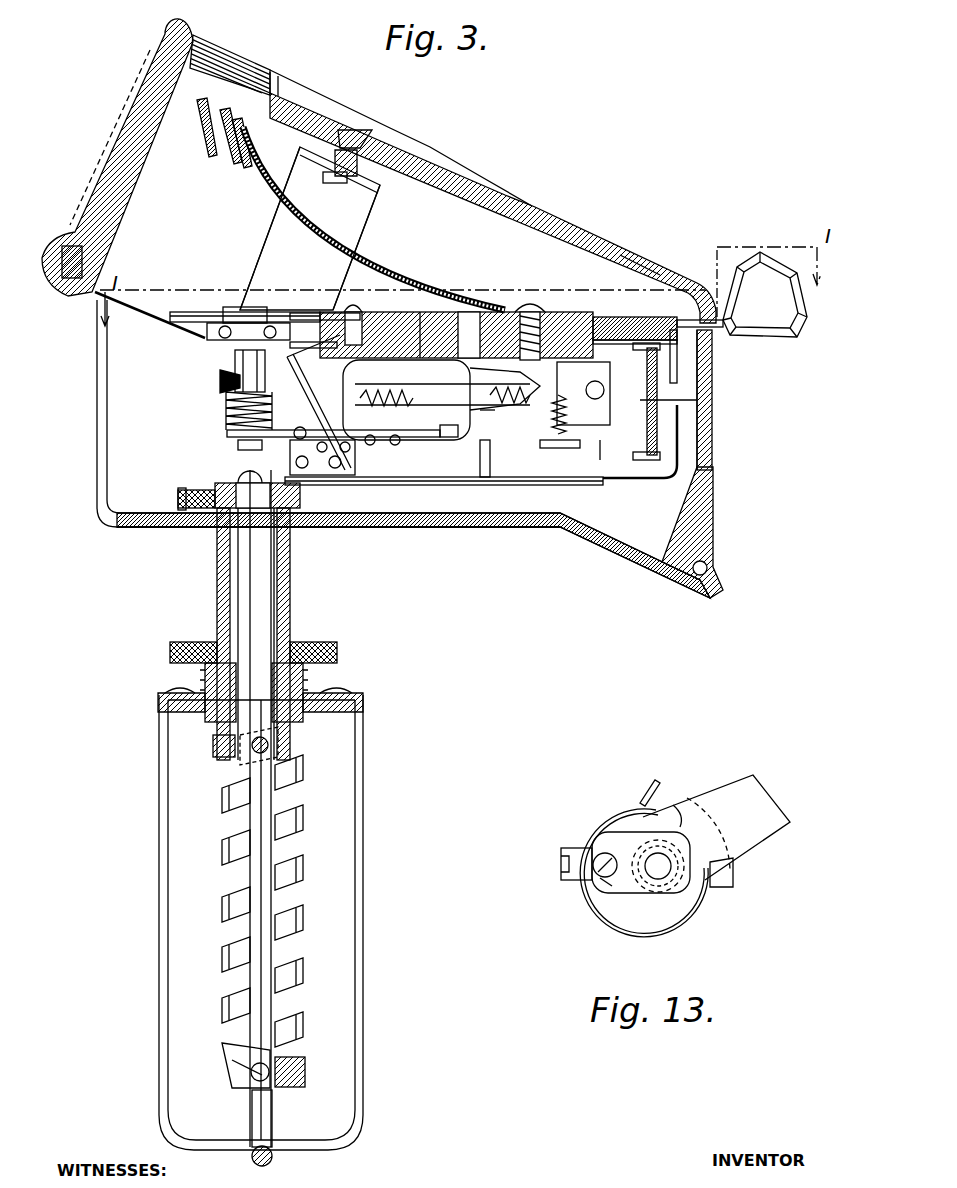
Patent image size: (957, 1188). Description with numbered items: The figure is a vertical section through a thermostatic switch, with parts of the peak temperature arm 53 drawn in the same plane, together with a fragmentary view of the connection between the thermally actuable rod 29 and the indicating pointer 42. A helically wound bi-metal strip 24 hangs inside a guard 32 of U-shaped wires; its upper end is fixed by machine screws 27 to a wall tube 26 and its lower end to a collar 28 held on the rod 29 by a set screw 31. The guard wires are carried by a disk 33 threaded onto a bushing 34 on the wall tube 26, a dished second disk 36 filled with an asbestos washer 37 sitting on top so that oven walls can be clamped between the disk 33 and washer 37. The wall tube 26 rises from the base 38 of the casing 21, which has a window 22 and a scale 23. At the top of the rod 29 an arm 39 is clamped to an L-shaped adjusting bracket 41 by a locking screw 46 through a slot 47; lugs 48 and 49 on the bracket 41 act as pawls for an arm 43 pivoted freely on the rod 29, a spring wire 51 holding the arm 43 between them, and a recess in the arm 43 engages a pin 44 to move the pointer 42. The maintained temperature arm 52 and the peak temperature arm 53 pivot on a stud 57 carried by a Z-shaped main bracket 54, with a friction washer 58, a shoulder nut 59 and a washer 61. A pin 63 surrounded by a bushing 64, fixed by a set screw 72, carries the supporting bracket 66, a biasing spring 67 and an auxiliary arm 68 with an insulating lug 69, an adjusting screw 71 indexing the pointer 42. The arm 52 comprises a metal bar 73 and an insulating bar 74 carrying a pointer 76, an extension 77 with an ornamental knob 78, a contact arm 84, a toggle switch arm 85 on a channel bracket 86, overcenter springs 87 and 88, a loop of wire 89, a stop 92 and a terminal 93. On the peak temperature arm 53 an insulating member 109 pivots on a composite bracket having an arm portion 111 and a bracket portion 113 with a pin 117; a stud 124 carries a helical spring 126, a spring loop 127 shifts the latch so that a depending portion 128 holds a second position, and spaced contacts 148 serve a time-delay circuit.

In FIG. 3, the casing 21 is at (640, 257).
In FIG. 3, the window 22 is at (709, 385).
In FIG. 3, the scale 23 is at (700, 400).
In FIG. 3, the helically wound bi-metal strip 24 is at (303, 922).
In FIG. 3, the wall tube 26 is at (216, 588).
In FIG. 3, the machine screws 27 is at (213, 748).
In FIG. 3, the collar 28 is at (277, 1060).
In FIG. 3, the rod 29 is at (268, 808).
In FIG. 13, the rod 29 is at (662, 866).
In FIG. 3, the set screw 31 is at (305, 1073).
In FIG. 3, the guard 32 is at (363, 792).
In FIG. 3, the disk 33 is at (345, 692).
In FIG. 3, the bushing 34 is at (305, 672).
In FIG. 3, the second disk 36 is at (305, 641).
In FIG. 3, the washer 37 is at (170, 655).
In FIG. 3, the base 38 is at (185, 527).
In FIG. 3, the arm 39 is at (200, 487).
In FIG. 13, the arm 39 is at (612, 831).
In FIG. 3, the adjusting bracket 41 is at (178, 496).
In FIG. 13, the adjusting bracket 41 is at (561, 850).
In FIG. 3, the indicating pointer 42 is at (678, 433).
In FIG. 3, the arm 43 is at (345, 527).
In FIG. 13, the arm 43 is at (712, 790).
In FIG. 3, the pin 44 is at (500, 486).
In FIG. 3, the locking screw 46 is at (205, 490).
In FIG. 13, the locking screw 46 is at (600, 855).
In FIG. 13, the slot 47 is at (590, 883).
In FIG. 13, the lug 48 is at (650, 787).
In FIG. 13, the lug 49 is at (733, 888).
In FIG. 3, the spring wire 51 is at (292, 485).
In FIG. 13, the spring wire 51 is at (624, 934).
In FIG. 3, the maintained temperature arm 52 is at (300, 310).
In FIG. 3, the peak temperature arm 53 is at (333, 312).
In FIG. 3, the main bracket 54 is at (215, 325).
In FIG. 3, the stud 57 is at (254, 318).
In FIG. 3, the friction washer 58 is at (228, 325).
In FIG. 3, the shoulder nut 59 is at (210, 338).
In FIG. 3, the washer 61 is at (210, 340).
In FIG. 3, the pin 63 is at (240, 450).
In FIG. 3, the bushing 64 is at (313, 355).
In FIG. 3, the supporting bracket 66 is at (322, 455).
In FIG. 3, the biasing spring 67 is at (226, 410).
In FIG. 3, the auxiliary arm 68 is at (227, 434).
In FIG. 3, the tab or lug 69 is at (392, 445).
In FIG. 3, the adjusting screw 71 is at (298, 428).
In FIG. 3, the set screw 72 is at (218, 381).
In FIG. 3, the metal bar 73 is at (318, 313).
In FIG. 3, the bar of electric-insulating material 74 is at (430, 311).
In FIG. 3, the pointer 76 is at (678, 370).
In FIG. 3, the extension 77 is at (723, 327).
In FIG. 3, the ornamental knob 78 is at (797, 303).
In FIG. 3, the contact arm 84 is at (525, 409).
In FIG. 3, the toggle switch arm 85 is at (470, 312).
In FIG. 3, the bracket 86 is at (448, 437).
In FIG. 3, the overcenter spring 87 is at (390, 389).
In FIG. 3, the overcenter spring 88 is at (492, 410).
In FIG. 3, the loop of wire 89 is at (424, 392).
In FIG. 3, the stop 92 is at (403, 306).
In FIG. 3, the terminal 93 is at (528, 311).
In FIG. 3, the member of electric-insulating material 109 is at (583, 214).
In FIG. 3, the arm portion 111 is at (606, 462).
In FIG. 3, the bracket portion 113 is at (600, 425).
In FIG. 3, the pin 117 is at (598, 390).
In FIG. 3, the stud 124 is at (560, 462).
In FIG. 3, the helical spring 126 is at (562, 420).
In FIG. 3, the spring loop 127 is at (540, 444).
In FIG. 3, the depending portion 128 is at (604, 398).
In FIG. 3, the contacts 148 is at (268, 72).